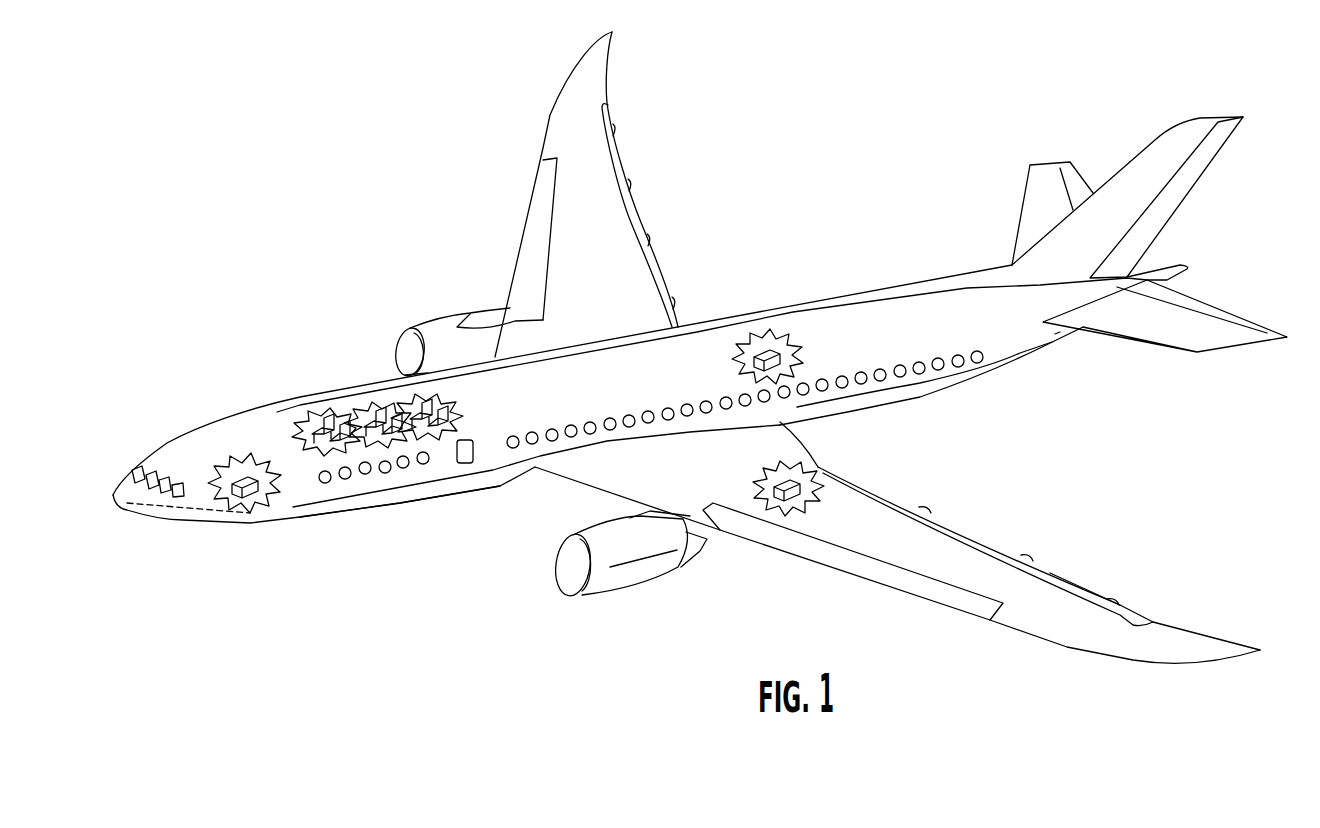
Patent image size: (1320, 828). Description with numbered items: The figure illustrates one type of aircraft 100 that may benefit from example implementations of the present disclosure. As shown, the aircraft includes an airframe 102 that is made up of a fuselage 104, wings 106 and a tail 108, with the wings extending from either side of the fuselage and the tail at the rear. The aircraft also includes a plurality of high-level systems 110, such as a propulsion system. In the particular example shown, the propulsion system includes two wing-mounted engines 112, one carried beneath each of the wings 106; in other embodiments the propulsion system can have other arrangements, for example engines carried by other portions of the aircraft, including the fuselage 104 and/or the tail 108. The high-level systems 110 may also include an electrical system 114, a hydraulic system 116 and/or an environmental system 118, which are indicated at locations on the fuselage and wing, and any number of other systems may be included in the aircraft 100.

The aircraft 100 is at (700, 348).
The airframe 102 is at (630, 394).
The fuselage 104 is at (400, 528).
The wings 106 is at (858, 348).
The tail 108 is at (1078, 234).
The high-level systems 110 is at (1158, 546).
The wing-mounted engines 112 is at (557, 435).
The electrical system 114 is at (231, 436).
The hydraulic system 116 is at (833, 475).
The environmental system 118 is at (760, 317).